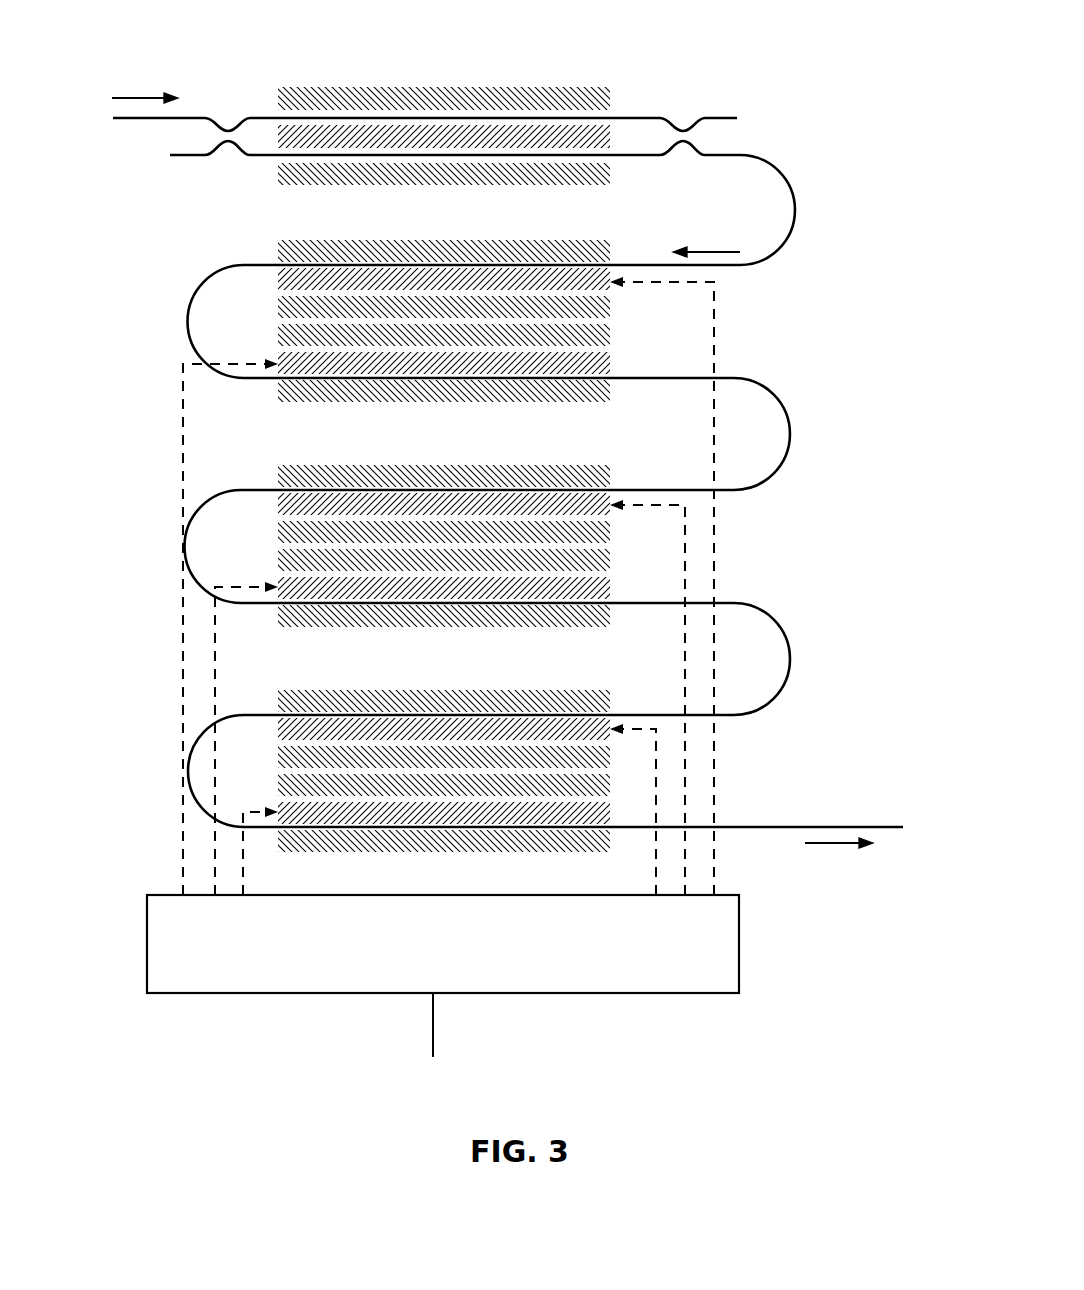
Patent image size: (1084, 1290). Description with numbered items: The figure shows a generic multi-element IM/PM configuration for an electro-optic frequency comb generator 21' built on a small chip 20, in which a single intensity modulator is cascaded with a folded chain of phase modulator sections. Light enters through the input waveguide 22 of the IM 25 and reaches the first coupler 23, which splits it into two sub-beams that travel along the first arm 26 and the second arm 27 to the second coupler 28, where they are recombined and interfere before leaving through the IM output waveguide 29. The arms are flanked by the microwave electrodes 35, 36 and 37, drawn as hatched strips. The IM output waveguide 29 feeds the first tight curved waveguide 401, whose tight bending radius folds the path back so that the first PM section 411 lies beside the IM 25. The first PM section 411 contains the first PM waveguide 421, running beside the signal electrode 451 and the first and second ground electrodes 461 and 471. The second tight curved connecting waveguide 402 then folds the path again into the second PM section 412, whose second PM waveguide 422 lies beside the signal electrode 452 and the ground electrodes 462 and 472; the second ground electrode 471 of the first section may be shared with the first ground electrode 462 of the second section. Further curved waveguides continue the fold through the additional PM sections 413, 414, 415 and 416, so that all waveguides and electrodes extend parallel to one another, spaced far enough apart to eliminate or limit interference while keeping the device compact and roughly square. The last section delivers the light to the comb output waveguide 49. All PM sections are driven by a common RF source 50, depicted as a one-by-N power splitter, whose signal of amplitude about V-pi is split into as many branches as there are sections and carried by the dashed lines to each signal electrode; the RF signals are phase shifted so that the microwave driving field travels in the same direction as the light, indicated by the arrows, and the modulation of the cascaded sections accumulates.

The chip 20 is at (962, 336).
The electro-optic frequency comb generator 21' is at (65, 223).
The input waveguide 22 is at (128, 119).
The first coupler 23 is at (228, 130).
The IM 25 is at (603, 64).
The first arm 26 is at (267, 117).
The second arm 27 is at (255, 157).
The second coupler 28 is at (675, 123).
The IM output waveguide 29 is at (737, 152).
The electrode 35 is at (333, 137).
The electrode 36 is at (389, 90).
The electrode 37 is at (460, 170).
The first tight curved waveguide 401 is at (795, 208).
The second tight curved connecting waveguide 402 is at (190, 315).
The first PM section 411 is at (148, 347).
The second PM section 412 is at (770, 360).
The PM section 413 is at (148, 548).
The PM section 414 is at (750, 566).
The PM section 415 is at (145, 752).
The PM section 416 is at (736, 784).
The first PM waveguide 421 is at (632, 263).
The second PM waveguide 422 is at (633, 378).
The signal electrode 451 is at (530, 285).
The signal electrode 452 is at (485, 360).
The first ground electrode 461 is at (353, 245).
The first ground electrode 462 is at (610, 332).
The second ground electrode 471 is at (278, 315).
The second ground electrode 472 is at (292, 397).
The comb output waveguide 49 is at (888, 826).
The common RF source 50 is at (680, 993).